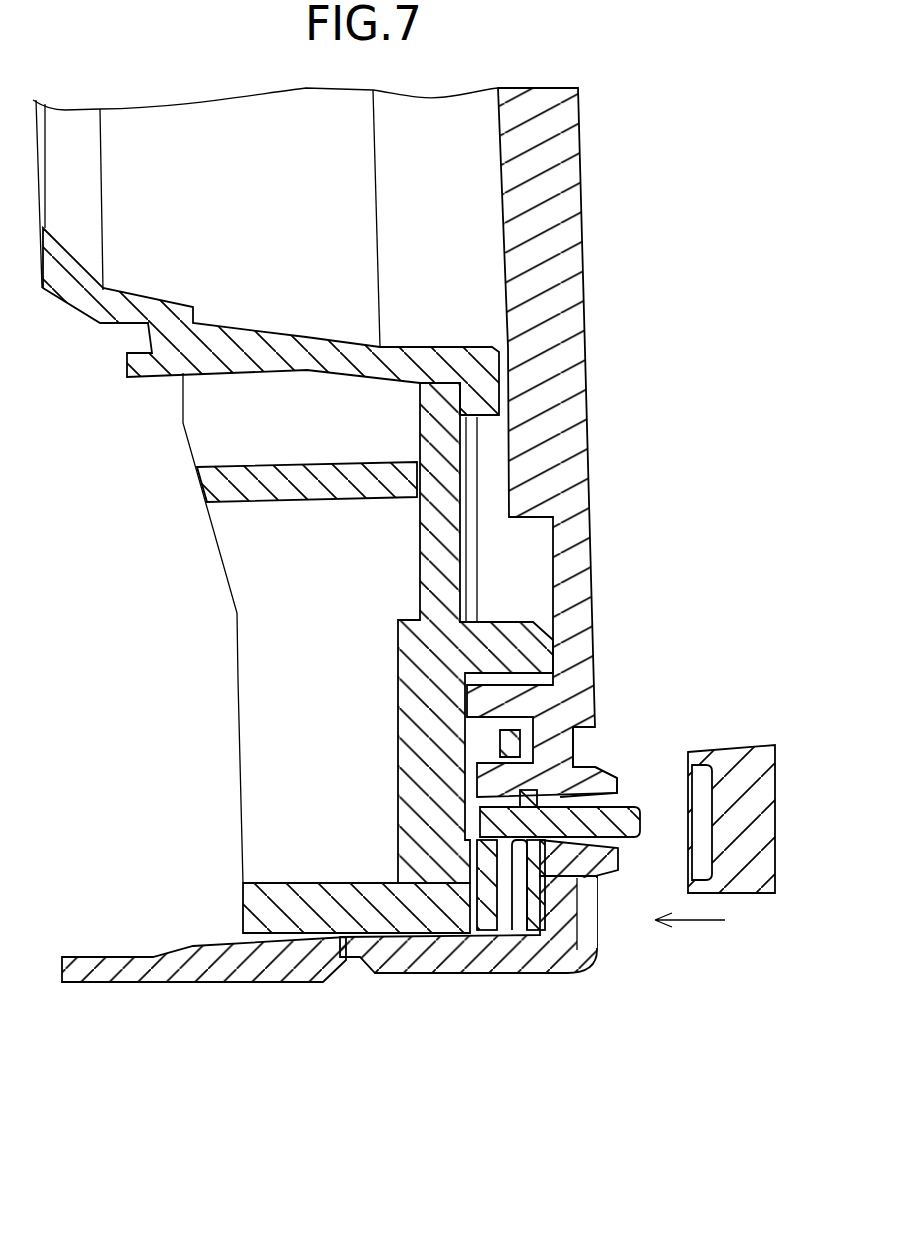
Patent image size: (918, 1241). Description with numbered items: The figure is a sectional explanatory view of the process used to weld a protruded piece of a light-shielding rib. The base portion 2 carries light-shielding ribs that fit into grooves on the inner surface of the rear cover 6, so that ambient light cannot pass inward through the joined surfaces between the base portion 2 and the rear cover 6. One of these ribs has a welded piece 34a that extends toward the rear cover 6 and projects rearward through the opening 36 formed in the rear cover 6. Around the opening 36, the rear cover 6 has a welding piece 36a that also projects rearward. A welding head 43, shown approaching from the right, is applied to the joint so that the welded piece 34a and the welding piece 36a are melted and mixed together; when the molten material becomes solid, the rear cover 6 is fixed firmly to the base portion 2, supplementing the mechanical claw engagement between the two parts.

The rear cover 6 is at (586, 224).
The base portion 2 is at (398, 693).
The welded piece 34a is at (620, 805).
The welding piece 36a is at (612, 770).
The opening 36 is at (514, 847).
The welding head 43 is at (745, 895).